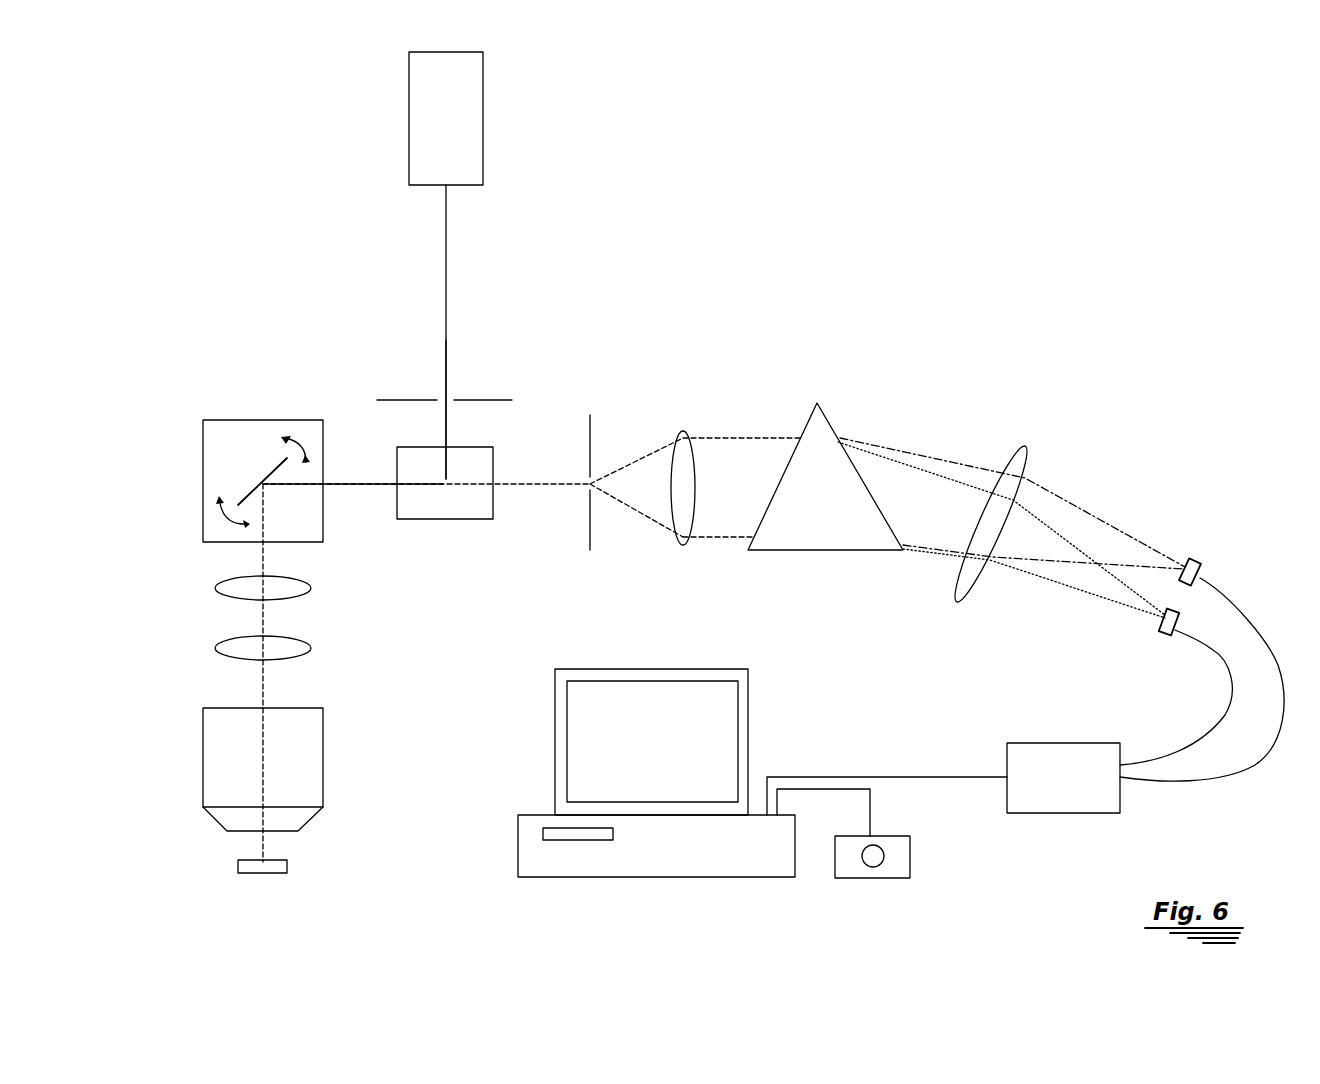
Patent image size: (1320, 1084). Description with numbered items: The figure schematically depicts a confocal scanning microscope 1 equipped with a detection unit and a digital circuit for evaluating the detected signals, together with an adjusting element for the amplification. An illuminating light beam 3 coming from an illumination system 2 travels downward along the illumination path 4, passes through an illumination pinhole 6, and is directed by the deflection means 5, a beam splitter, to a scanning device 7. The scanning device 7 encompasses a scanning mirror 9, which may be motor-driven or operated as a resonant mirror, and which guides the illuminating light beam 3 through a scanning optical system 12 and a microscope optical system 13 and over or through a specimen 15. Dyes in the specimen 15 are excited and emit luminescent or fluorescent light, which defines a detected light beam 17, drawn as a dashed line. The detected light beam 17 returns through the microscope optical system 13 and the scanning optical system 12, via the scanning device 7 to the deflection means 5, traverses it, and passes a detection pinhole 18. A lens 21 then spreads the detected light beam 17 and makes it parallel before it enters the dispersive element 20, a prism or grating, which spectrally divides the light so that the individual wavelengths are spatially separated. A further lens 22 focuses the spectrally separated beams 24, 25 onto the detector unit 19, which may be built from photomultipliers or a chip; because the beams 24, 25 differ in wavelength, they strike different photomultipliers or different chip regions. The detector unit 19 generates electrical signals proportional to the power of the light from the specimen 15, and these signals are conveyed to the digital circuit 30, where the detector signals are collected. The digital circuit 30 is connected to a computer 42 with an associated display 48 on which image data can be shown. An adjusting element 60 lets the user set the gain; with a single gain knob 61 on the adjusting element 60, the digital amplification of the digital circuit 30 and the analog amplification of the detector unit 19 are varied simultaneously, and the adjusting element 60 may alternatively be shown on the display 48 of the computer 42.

The scanning microscope 1 is at (527, 362).
The illumination system 2 is at (470, 95).
The illuminating light beam 3 is at (445, 223).
The illumination beam 4 is at (445, 362).
The deflection means 5 is at (470, 513).
The illumination pinhole 6 is at (393, 400).
The scanning device 7 is at (227, 445).
The scanning mirror 9 is at (248, 487).
The scanning optical system 12 is at (238, 586).
The microscope optical system 13 is at (226, 737).
The specimen 15 is at (264, 863).
The detected light beam 17 is at (505, 483).
The detection pinhole 18 is at (592, 442).
The detector unit 19 is at (1193, 563).
The dispersive element 20 is at (772, 550).
The lens 21 is at (675, 522).
The further lens 22 is at (967, 582).
The spectrally separated beam 24 is at (1110, 528).
The spectrally separated beam 25 is at (1083, 597).
The digital circuit 30 is at (1033, 788).
The computer 42 is at (767, 865).
The display 48 is at (651, 742).
The adjusting element 60 is at (903, 860).
The gain knob 61 is at (868, 862).